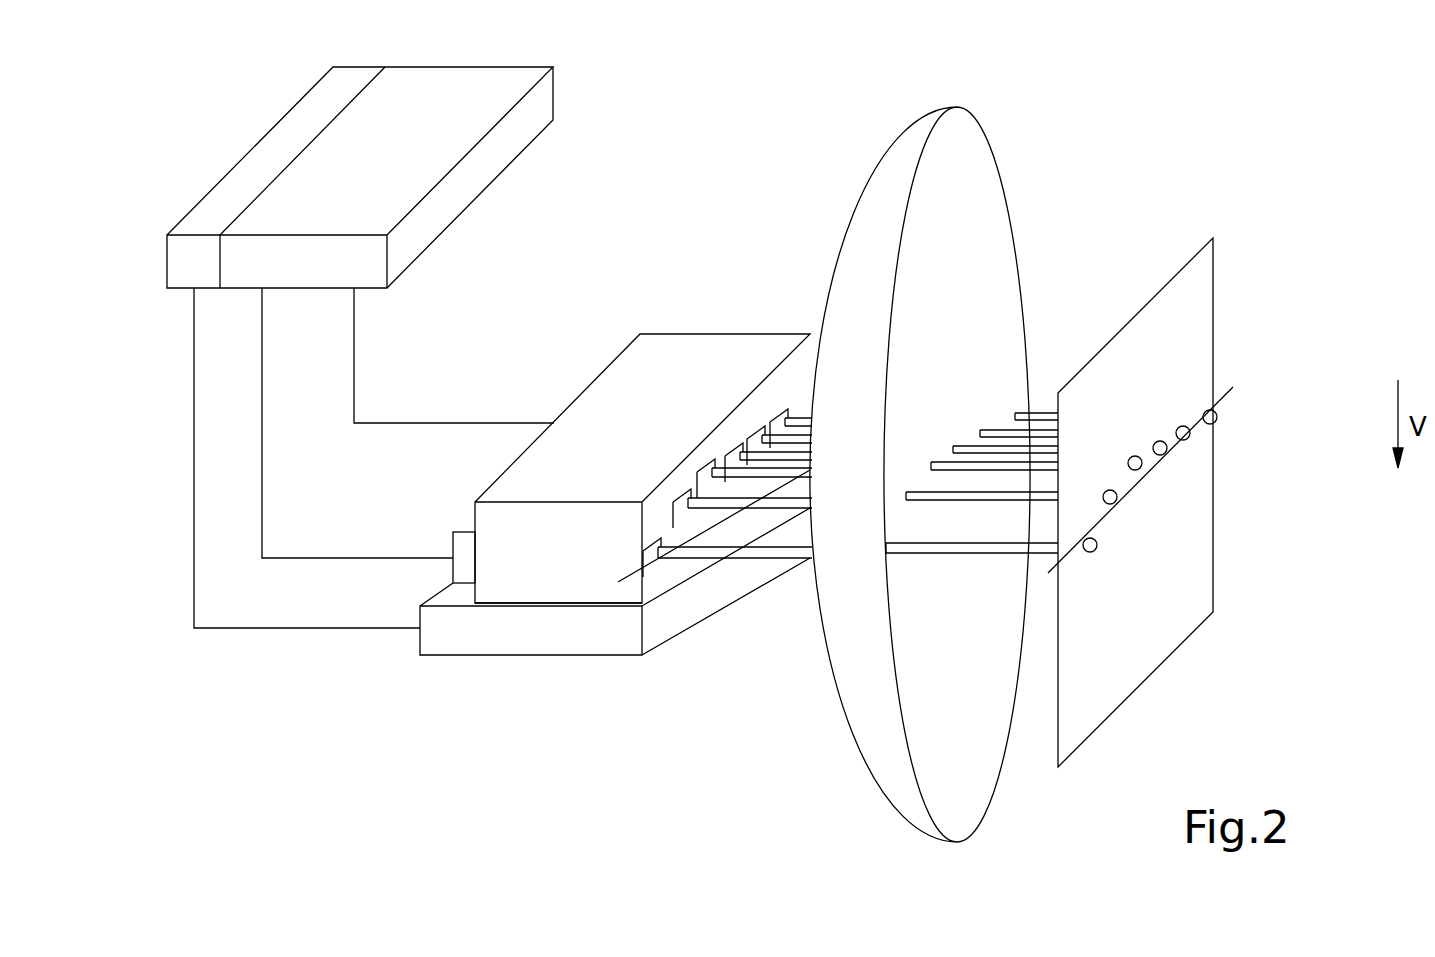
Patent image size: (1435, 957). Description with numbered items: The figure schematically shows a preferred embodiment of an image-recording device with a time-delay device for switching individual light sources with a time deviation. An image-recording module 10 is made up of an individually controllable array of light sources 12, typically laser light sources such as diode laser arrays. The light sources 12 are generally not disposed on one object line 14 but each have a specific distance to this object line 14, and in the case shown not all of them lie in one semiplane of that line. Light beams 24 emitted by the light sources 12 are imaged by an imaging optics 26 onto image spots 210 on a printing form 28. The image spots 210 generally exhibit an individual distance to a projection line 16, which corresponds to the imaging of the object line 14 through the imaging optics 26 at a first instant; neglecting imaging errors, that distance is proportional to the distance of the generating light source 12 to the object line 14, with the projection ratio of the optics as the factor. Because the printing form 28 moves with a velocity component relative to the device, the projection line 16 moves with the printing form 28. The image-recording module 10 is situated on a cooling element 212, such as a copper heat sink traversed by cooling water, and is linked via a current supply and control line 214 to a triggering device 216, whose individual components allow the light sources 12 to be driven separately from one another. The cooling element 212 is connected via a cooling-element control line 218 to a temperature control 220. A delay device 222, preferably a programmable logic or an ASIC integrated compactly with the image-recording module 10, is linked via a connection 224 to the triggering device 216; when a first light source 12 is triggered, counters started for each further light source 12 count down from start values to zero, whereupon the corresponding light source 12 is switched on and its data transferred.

The image-recording module 10 is at (603, 413).
The light sources 12 is at (782, 427).
The object line 14 is at (633, 565).
The projection line 16 is at (1226, 393).
The light beams 24 is at (798, 440).
The imaging optics 26 is at (882, 192).
The printing form 28 is at (1170, 313).
The image spots 210 is at (1182, 441).
The cooling element 212 is at (558, 643).
The current supply and control line 214 is at (354, 386).
The triggering device 216 is at (520, 125).
The cooling-element control line 218 is at (194, 440).
The temperature control 220 is at (237, 160).
The delay device 222 is at (460, 547).
The connection 224 is at (262, 493).